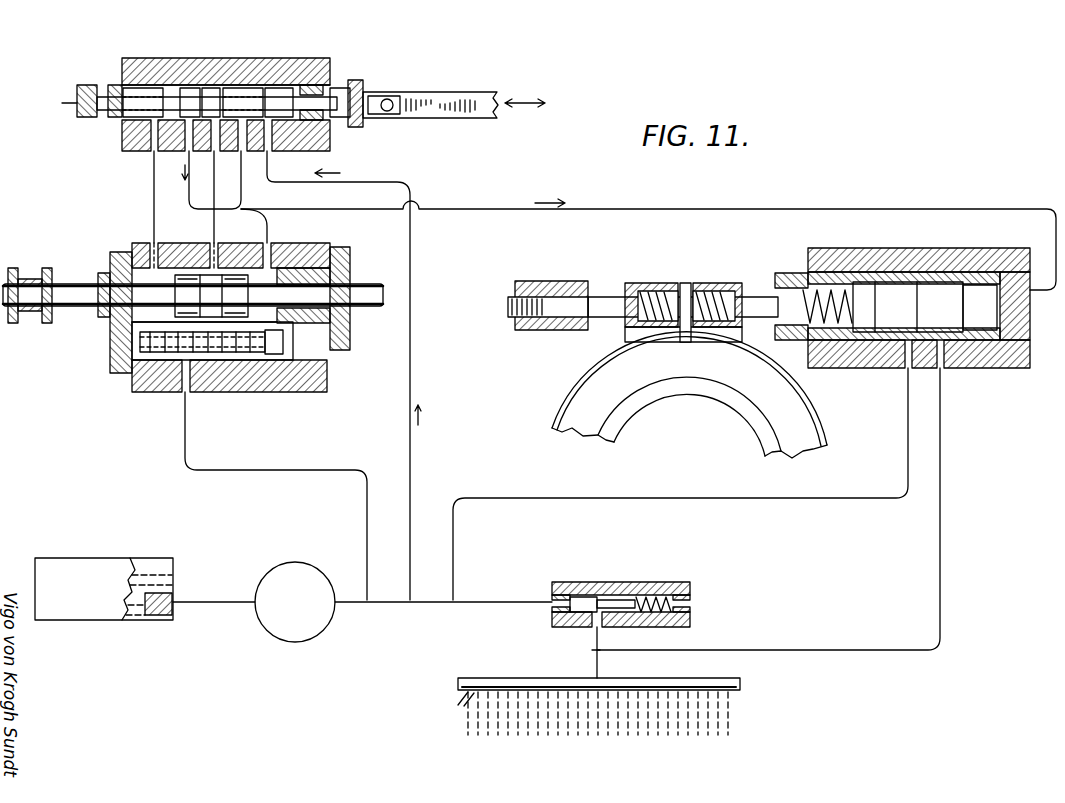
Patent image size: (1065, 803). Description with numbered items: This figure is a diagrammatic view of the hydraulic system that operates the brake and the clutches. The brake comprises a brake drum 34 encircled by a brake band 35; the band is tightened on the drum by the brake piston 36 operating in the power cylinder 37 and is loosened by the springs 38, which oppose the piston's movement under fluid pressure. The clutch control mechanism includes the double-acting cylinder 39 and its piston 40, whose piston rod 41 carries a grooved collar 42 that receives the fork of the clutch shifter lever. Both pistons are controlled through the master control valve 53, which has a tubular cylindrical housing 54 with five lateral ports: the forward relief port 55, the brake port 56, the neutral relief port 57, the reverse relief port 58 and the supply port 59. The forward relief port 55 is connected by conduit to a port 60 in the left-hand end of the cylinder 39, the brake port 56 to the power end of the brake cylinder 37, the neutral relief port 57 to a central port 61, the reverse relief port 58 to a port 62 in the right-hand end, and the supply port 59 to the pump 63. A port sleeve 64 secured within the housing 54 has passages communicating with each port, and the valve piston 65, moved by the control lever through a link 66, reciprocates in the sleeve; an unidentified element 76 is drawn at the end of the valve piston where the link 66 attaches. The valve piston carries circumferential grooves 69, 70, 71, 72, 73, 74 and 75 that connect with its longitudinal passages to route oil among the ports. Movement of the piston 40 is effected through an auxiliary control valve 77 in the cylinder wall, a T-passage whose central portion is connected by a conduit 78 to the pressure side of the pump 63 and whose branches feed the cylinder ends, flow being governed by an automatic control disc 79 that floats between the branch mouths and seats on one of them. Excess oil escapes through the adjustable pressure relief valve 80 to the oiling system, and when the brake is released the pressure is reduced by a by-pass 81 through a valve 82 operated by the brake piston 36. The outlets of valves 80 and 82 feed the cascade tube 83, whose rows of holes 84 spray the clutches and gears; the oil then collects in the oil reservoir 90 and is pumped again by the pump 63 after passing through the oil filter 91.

The brake drum 34 is at (575, 430).
The brake band 35 is at (577, 372).
The brake piston 36 is at (915, 290).
The power cylinder 37 is at (1003, 368).
The springs 38 is at (686, 290).
The double-acting cylinder 39 is at (130, 248).
The piston 40 is at (208, 282).
The piston rod 41 is at (76, 284).
The grooved collar 42 is at (40, 323).
The master control valve 53 is at (128, 58).
The tubular cylindrical housing 54 is at (330, 146).
The forward relief port 55 is at (142, 151).
The brake port 56 is at (180, 151).
The neutral relief port 57 is at (216, 151).
The reverse relief port 58 is at (244, 151).
The supply port 59 is at (270, 151).
The port 60 is at (152, 245).
The central port 61 is at (216, 243).
The port 62 is at (269, 241).
The pump 63 is at (283, 565).
The port sleeve 64 is at (85, 117).
The valve piston 65 is at (340, 90).
The link 66 is at (465, 92).
The circumferential groove 69 is at (113, 90).
The circumferential groove 70 is at (140, 88).
The circumferential groove 71 is at (188, 88).
The circumferential groove 72 is at (210, 88).
The circumferential groove 73 is at (240, 88).
The circumferential groove 74 is at (280, 88).
The circumferential groove 75 is at (312, 85).
The nut 76 is at (362, 84).
The auxiliary control valve 77 is at (132, 388).
The conduit 78 is at (183, 430).
The automatic control disc 79 is at (195, 360).
The pressure relief valve 80 is at (610, 582).
The by-pass 81 is at (942, 368).
The valve 82 is at (900, 342).
The cascade tube 83 is at (511, 678).
The holes 84 is at (460, 698).
The oil reservoir 90 is at (154, 568).
The oil filter 91 is at (157, 615).